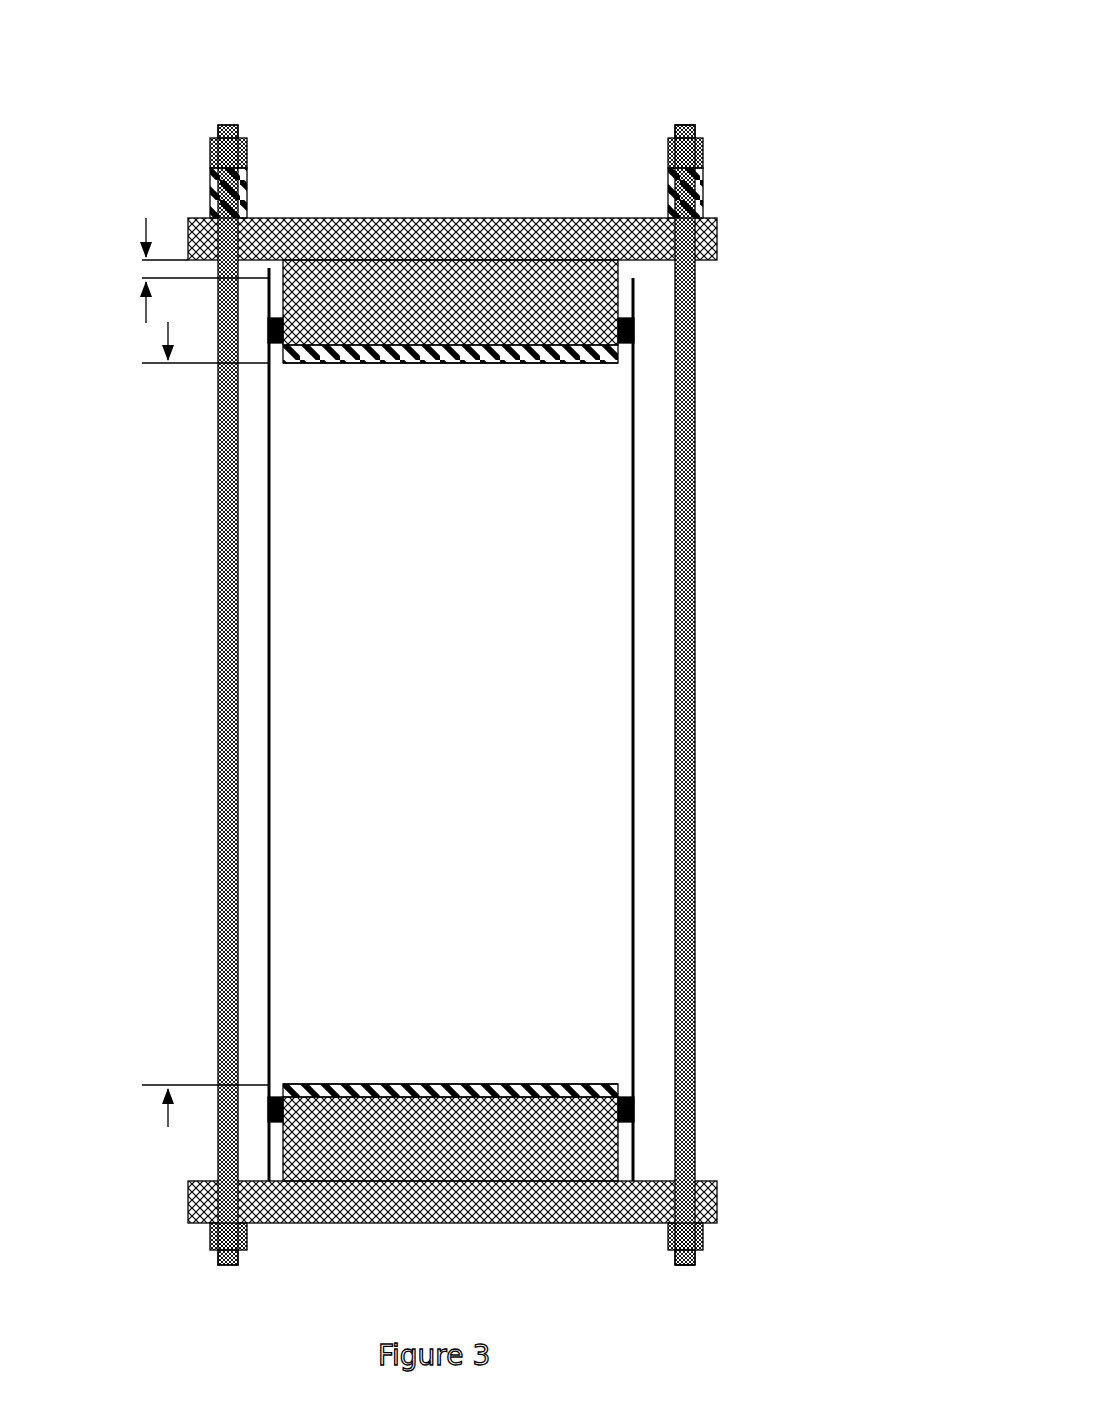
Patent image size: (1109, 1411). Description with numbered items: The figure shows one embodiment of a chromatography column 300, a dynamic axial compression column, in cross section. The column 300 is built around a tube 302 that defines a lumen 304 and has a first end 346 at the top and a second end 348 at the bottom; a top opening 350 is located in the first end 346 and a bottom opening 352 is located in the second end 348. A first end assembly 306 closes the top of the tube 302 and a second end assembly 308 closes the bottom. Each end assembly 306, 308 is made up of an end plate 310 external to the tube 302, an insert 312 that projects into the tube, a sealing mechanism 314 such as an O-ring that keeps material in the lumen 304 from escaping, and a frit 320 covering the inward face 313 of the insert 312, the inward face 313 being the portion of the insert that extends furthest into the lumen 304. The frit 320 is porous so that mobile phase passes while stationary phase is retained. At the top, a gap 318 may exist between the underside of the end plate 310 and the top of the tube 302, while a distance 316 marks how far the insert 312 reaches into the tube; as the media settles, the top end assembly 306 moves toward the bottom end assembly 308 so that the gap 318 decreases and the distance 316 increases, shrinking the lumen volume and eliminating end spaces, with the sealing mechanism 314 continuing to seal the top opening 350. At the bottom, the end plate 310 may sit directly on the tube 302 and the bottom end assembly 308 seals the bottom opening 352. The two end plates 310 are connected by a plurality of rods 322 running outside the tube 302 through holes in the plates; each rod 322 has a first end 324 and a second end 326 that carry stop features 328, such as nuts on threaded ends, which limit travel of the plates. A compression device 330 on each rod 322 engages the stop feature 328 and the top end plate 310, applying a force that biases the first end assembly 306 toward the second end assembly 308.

The chromatography column 300 is at (824, 87).
The tube 302 is at (634, 733).
The lumen 304 is at (548, 578).
The first end assembly 306 is at (456, 192).
The second end assembly 308 is at (499, 1243).
The end plate 310 is at (717, 228).
The insert 312 is at (614, 308).
The inward face 313 is at (383, 349).
The sealing mechanism 314 is at (636, 330).
The distance 316 is at (168, 333).
The gap 318 is at (146, 232).
The frit 320 is at (436, 364).
The rod 322 is at (218, 572).
The first end of rod 324 is at (686, 118).
The second end of rod 326 is at (687, 1278).
The stop feature 328 is at (700, 138).
The compression device 330 is at (212, 195).
The first end of tube 346 is at (644, 279).
The second end of tube 348 is at (644, 1169).
The top opening 350 is at (272, 266).
The bottom opening 352 is at (624, 1175).